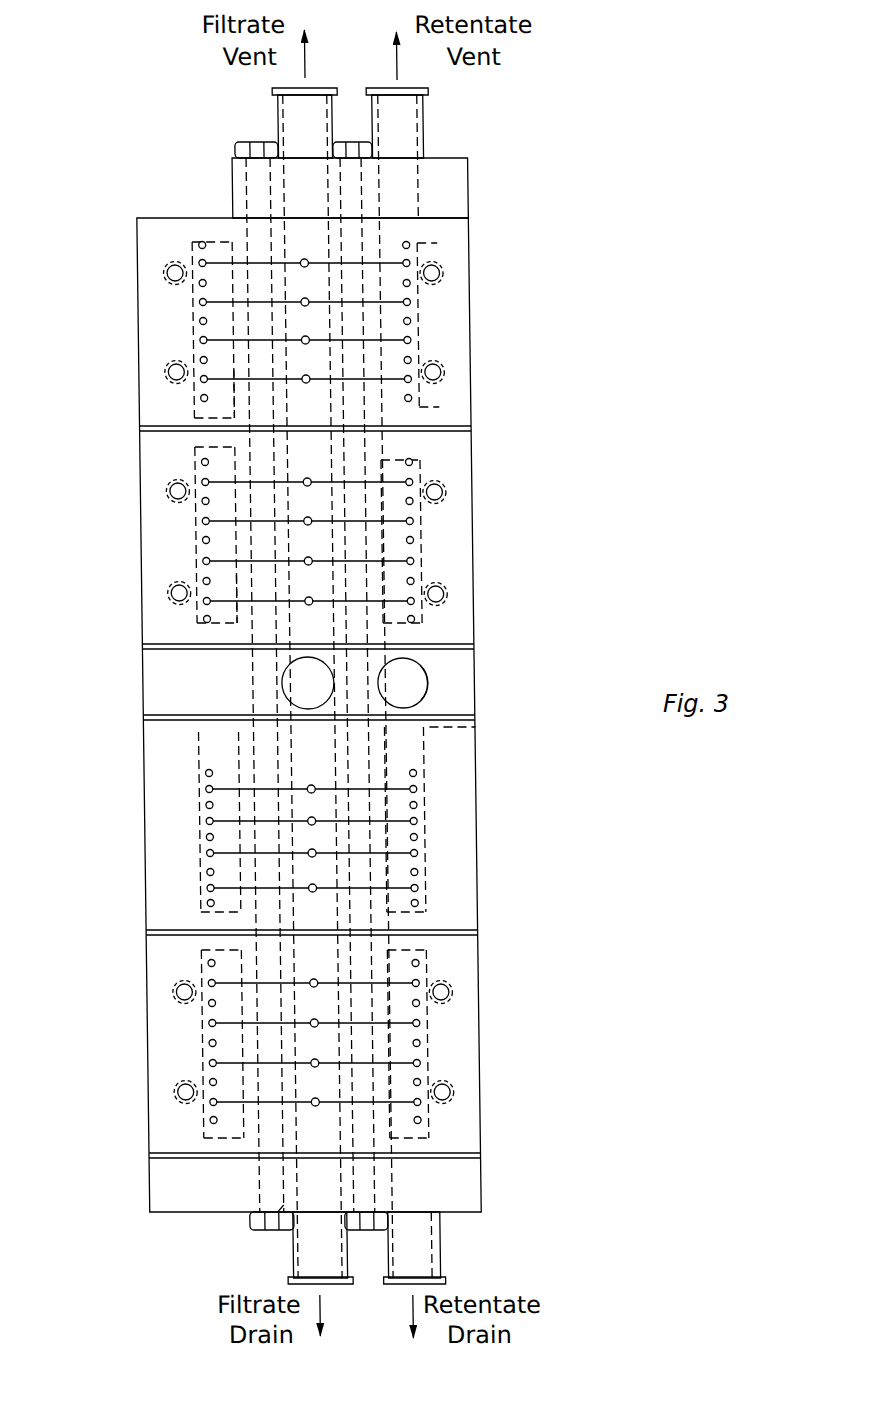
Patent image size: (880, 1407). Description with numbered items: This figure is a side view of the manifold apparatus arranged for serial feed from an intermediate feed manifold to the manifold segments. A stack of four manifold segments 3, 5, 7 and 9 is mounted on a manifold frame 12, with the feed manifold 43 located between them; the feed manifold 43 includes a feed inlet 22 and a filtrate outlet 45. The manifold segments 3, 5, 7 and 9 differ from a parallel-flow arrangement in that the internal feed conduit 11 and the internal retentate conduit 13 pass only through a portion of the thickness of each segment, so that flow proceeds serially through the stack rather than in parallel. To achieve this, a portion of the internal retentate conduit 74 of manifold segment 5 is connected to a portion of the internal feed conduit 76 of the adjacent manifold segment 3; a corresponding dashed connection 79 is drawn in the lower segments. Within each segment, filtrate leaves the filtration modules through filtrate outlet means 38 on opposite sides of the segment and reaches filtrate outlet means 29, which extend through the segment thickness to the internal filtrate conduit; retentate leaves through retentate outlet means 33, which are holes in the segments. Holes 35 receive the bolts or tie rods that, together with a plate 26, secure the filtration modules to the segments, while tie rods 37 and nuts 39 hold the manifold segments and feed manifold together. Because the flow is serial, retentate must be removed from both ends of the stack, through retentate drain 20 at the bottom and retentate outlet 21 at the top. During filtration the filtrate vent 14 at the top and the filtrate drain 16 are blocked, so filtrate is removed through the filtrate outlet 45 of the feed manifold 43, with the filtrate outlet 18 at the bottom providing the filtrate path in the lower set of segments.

The manifold segment 3 is at (133, 287).
The manifold segment 5 is at (467, 463).
The manifold segment 7 is at (467, 763).
The manifold segment 9 is at (467, 1112).
The internal feed conduit 11 is at (210, 230).
The manifold frame 12 is at (134, 1183).
The internal retentate conduit 13 is at (418, 194).
The filtrate vent 14 is at (275, 118).
The filtrate drain 16 is at (467, 725).
The filtrate outlet 18 is at (331, 1276).
The retentate drain 20 is at (425, 1250).
The retentate outlet 21 is at (422, 117).
The feed inlet 22 is at (420, 697).
The plate 26 is at (197, 243).
The filtrate outlet means 29 is at (299, 379).
The retentate outlet means 33 is at (408, 243).
The holes 35 is at (163, 273).
The tie rods 37 is at (267, 1205).
The filtrate outlet means 38 is at (196, 262).
The nuts 39 is at (256, 1232).
The feed manifold 43 is at (467, 683).
The filtrate outlet 45 is at (273, 683).
The portion of internal retentate conduit 74 is at (403, 683).
The portion of internal feed conduit 76 is at (233, 388).
The cartridge 79 is at (233, 585).